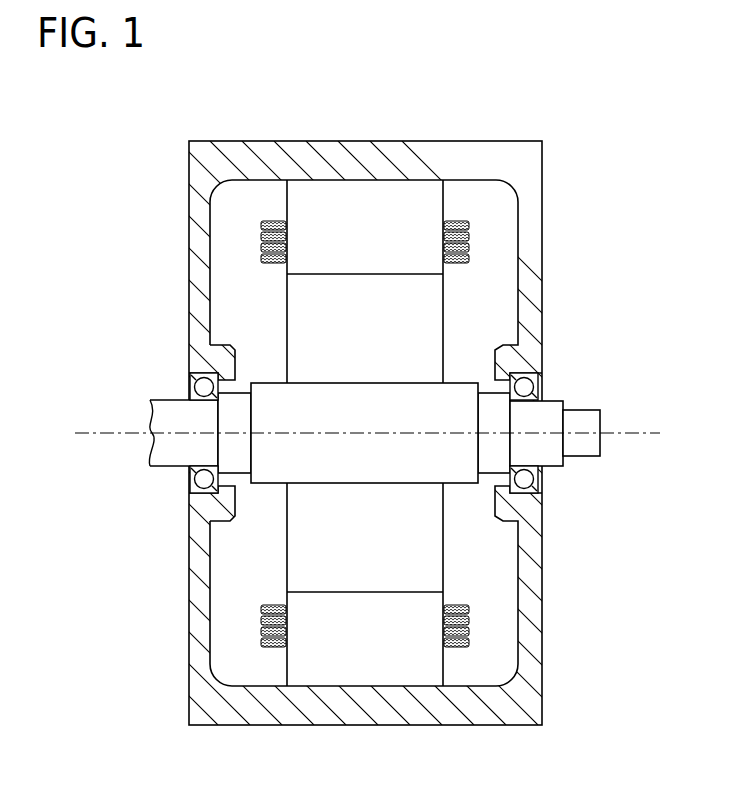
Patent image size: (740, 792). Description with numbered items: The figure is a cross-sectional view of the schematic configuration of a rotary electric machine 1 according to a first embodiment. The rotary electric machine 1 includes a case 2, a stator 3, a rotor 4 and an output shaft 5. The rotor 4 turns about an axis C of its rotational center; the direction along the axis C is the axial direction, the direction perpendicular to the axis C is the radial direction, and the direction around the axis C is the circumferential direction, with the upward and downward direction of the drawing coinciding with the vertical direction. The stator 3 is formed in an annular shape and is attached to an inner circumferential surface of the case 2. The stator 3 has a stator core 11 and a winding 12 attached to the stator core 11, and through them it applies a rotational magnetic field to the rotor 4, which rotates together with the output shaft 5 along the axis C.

The rotary electric machine 1 is at (580, 156).
The case 2 is at (170, 201).
The stator 3 is at (460, 433).
The rotor 4 is at (377, 536).
The output shaft 5 is at (177, 457).
The stator core 11 is at (405, 235).
The winding 12 is at (469, 243).
The axis C is at (100, 432).